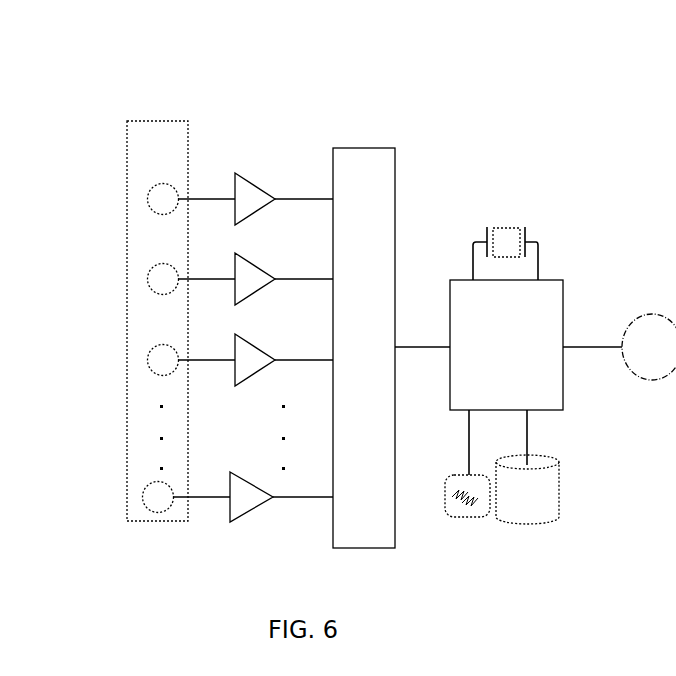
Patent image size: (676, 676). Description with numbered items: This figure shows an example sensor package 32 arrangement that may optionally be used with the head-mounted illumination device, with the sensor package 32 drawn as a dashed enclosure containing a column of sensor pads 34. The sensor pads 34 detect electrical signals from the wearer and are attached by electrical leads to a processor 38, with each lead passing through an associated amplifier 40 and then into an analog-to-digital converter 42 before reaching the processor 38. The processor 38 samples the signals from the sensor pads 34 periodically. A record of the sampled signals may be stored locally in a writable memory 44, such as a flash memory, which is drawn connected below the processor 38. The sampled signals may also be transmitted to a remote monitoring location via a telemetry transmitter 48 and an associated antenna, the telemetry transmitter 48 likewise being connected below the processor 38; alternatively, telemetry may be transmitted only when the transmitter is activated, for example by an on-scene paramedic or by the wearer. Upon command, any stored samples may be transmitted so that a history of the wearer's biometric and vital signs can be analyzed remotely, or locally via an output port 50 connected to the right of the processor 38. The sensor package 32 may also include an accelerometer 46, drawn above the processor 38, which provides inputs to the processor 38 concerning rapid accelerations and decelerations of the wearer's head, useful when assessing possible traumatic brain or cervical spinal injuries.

The sensor package 32 is at (188, 142).
The sensor pad 34 is at (160, 198).
The processor 38 is at (506, 345).
The amplifier 40 is at (243, 502).
The analog-to-digital converter 42 is at (364, 348).
The writable memory 44 is at (527, 489).
The accelerometer 46 is at (505, 235).
The telemetry transmitter 48 is at (465, 507).
The output port 50 is at (649, 347).